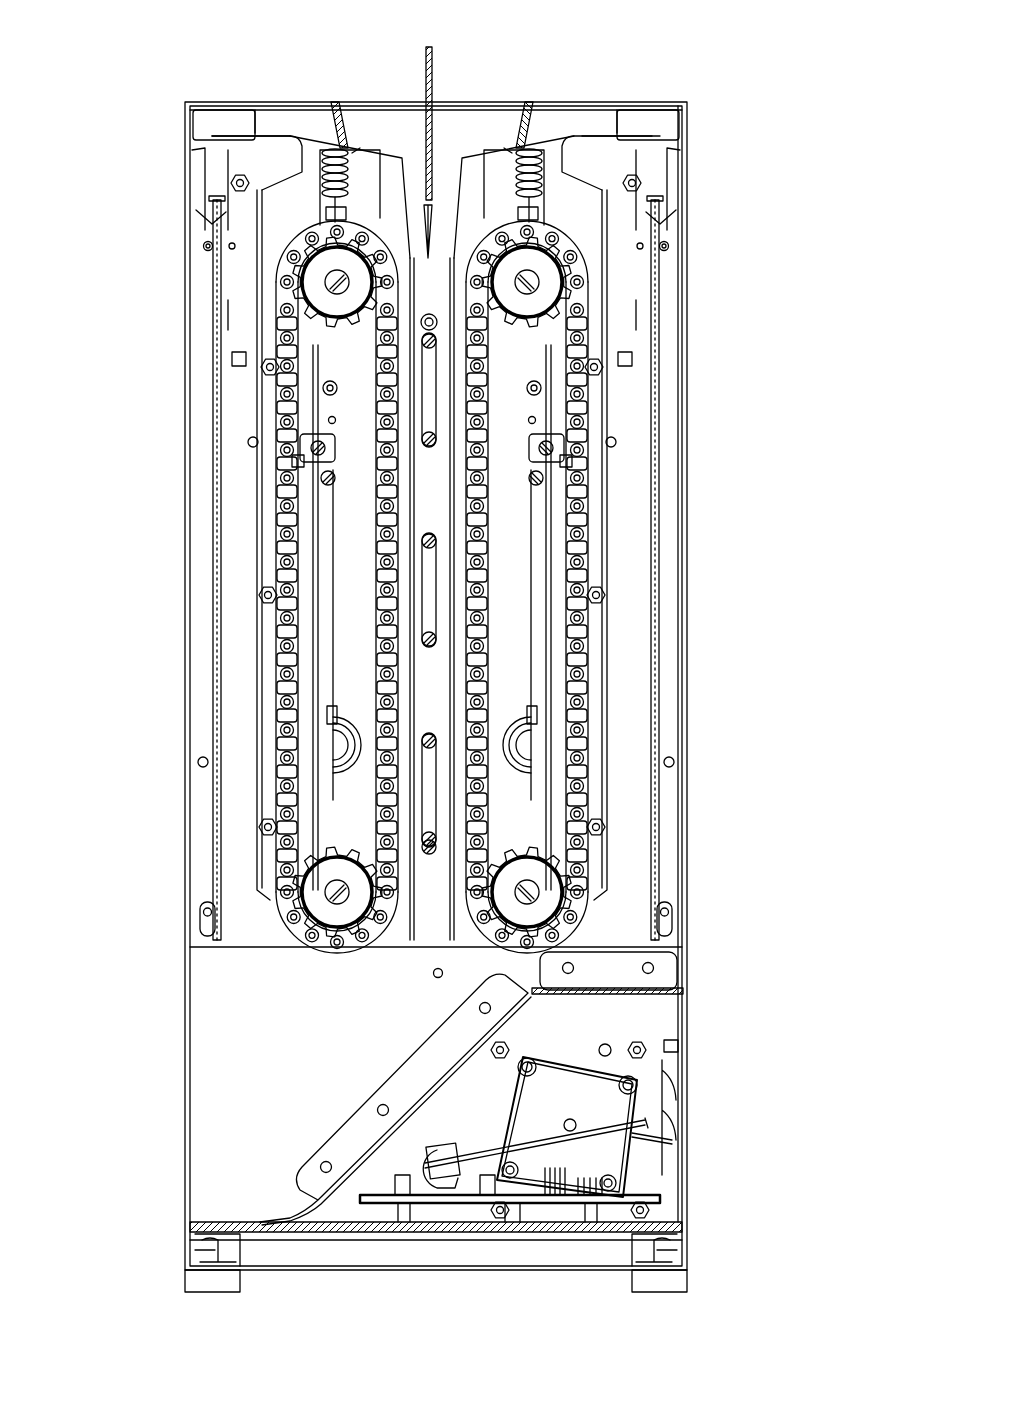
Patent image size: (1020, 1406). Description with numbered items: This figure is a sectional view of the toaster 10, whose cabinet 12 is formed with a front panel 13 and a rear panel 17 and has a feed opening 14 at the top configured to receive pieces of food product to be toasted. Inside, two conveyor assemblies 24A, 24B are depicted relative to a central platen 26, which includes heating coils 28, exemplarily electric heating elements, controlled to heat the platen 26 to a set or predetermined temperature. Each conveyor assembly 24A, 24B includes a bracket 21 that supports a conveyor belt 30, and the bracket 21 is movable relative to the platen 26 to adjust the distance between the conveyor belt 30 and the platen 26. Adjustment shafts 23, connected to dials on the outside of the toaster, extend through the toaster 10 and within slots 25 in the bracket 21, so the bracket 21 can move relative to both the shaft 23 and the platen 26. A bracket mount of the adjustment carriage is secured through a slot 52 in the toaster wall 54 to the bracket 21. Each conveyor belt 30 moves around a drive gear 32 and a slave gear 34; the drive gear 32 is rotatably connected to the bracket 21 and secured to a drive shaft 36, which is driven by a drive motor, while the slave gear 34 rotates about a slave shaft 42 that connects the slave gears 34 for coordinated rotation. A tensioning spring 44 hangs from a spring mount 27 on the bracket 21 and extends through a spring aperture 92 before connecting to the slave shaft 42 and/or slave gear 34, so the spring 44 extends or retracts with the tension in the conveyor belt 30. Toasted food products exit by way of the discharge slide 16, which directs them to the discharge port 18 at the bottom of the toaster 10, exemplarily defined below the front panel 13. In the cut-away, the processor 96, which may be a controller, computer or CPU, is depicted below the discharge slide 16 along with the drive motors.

The toaster 10 is at (700, 87).
The cabinet 12 is at (694, 576).
The front panel 13 is at (206, 726).
The feed opening 14 is at (357, 97).
The discharge slide 16 is at (420, 1096).
The rear panel 17 is at (676, 545).
The discharge port 18 is at (208, 1190).
The bracket 21 is at (272, 211).
The adjustment shaft 23 is at (300, 463).
The conveyor assembly 24A is at (264, 282).
The conveyor assembly 24B is at (598, 282).
The slot 25 is at (348, 441).
The platen 26 is at (436, 250).
The spring mount 27 is at (340, 135).
The heating coils 28 is at (428, 366).
The conveyor belt 30 is at (286, 515).
The drive gear 32 is at (352, 906).
The slave gear 34 is at (316, 294).
The drive shaft 36 is at (330, 905).
The slave shaft 42 is at (333, 283).
The tensioning spring 44 is at (308, 200).
The slot 52 is at (238, 360).
The toaster wall 54 is at (232, 310).
The spring aperture 92 is at (350, 207).
The processor 96 is at (583, 1218).